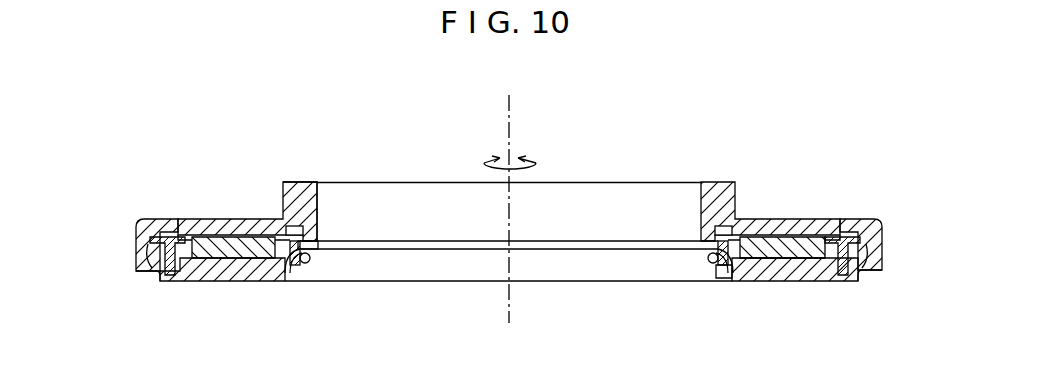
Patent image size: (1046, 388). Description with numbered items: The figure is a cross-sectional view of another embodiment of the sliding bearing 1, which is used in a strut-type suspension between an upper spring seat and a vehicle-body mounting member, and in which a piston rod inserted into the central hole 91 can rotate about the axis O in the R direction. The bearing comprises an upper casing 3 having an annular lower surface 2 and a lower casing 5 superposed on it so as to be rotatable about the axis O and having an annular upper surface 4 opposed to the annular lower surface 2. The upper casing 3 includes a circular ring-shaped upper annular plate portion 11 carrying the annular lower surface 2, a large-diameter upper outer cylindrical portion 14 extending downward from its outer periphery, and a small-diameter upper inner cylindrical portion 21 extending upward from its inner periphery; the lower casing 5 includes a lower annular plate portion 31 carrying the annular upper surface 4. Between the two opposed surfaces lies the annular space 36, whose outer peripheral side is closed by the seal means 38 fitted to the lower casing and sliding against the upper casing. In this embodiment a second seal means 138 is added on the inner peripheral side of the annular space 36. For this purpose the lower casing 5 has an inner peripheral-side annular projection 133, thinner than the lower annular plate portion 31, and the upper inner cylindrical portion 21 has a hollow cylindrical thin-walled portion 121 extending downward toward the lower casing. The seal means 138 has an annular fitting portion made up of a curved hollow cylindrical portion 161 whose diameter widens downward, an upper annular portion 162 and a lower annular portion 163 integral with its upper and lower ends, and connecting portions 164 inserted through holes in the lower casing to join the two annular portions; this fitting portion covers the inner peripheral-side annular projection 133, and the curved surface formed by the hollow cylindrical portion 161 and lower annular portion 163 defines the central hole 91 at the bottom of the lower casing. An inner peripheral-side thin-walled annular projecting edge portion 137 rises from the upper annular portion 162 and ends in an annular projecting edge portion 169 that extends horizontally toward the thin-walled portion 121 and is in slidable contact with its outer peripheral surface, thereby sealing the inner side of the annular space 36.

The sliding bearing 1 is at (274, 162).
The annular lower surface 2 is at (784, 238).
The upper casing 3 is at (737, 186).
The annular upper surface 4 is at (791, 259).
The lower casing 5 is at (766, 282).
The upper annular plate portion 11 is at (253, 188).
The upper outer cylindrical portion 14 is at (134, 253).
The upper inner cylindrical portion 21 is at (303, 192).
The lower annular plate portion 31 is at (231, 282).
The annular space 36 is at (853, 230).
The seal means 38 is at (163, 277).
The central hole 91 is at (556, 234).
The thin-walled portion 121 is at (318, 243).
The inner peripheral-side annular projection 133 is at (310, 259).
The inner peripheral-side thin-walled annular projecting edge portion 137 is at (301, 228).
The seal means 138 is at (300, 270).
The hollow cylindrical portion 161 is at (705, 272).
The upper annular portion 162 is at (706, 242).
The lower annular portion 163 is at (722, 279).
The connecting portions 164 is at (705, 262).
The annular projecting edge portion 169 is at (716, 228).
The axis O is at (512, 128).
The R direction R is at (536, 163).